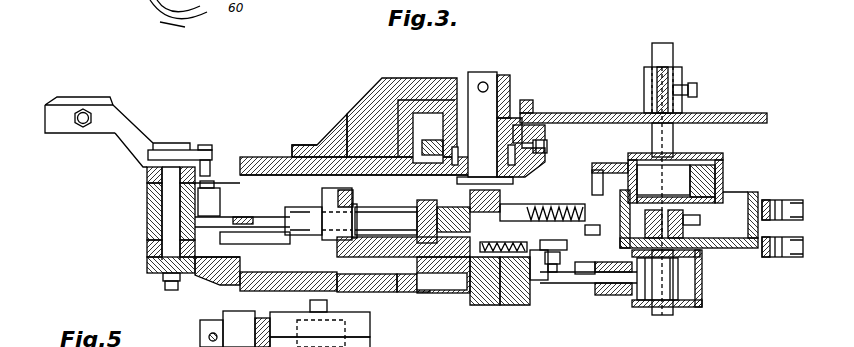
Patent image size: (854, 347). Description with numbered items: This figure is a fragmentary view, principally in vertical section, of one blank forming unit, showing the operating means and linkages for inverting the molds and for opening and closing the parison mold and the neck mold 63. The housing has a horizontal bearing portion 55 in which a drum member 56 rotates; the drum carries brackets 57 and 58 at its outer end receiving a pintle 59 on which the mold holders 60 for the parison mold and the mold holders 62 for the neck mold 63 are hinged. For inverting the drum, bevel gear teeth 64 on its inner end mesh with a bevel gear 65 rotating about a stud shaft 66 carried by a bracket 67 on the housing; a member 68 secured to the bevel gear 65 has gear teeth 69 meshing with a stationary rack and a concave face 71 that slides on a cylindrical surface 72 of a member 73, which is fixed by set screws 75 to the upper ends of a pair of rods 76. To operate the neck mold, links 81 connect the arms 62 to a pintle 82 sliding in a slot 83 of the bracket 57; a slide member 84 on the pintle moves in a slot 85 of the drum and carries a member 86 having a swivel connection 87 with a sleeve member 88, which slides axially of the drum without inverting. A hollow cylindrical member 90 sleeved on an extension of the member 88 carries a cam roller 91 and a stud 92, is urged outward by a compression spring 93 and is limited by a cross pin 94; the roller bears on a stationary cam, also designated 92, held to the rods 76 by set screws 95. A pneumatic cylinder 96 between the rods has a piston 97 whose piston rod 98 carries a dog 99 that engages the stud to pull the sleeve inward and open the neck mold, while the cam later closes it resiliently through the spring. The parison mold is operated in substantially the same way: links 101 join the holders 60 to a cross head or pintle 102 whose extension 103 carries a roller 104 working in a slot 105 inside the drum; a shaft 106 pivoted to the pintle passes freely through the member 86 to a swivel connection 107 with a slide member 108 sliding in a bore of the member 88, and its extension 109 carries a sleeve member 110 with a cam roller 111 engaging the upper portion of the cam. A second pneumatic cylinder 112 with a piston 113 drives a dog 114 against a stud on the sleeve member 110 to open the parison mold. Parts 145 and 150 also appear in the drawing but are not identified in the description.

The bearing portion 55 is at (302, 145).
The drum member 56 is at (420, 293).
The bracket 57 is at (147, 174).
The bracket 58 is at (147, 265).
The pintle 59 is at (168, 214).
The mold holders 60 is at (147, 243).
The mold holders 62 is at (130, 125).
The neck mold 63 is at (85, 98).
The bevel gear teeth 64 is at (475, 285).
The bevel gear 65 is at (540, 168).
The stud shaft 66 is at (490, 75).
The bracket 67 is at (385, 78).
The member 68 is at (508, 100).
The gear teeth 69 is at (548, 142).
The concave face 71 is at (533, 108).
The cylindrical surface 72 is at (540, 100).
The member 73 is at (745, 113).
The set screws 75 is at (697, 89).
The rods 76 is at (667, 52).
The links 81 is at (160, 150).
The pintle 82 is at (207, 160).
The slot 83 is at (222, 167).
The slide member 84 is at (218, 190).
The slot 85 is at (345, 120).
The member 86 is at (338, 276).
The swivel connection 87 is at (410, 292).
The sleeve member 88 is at (398, 157).
The hollow cylindrical member 90 is at (510, 300).
The cam roller 91 is at (556, 272).
The stud 92 is at (748, 225).
The compression spring 93 is at (523, 238).
The cross pin 94 is at (442, 279).
The set screws 95 is at (700, 219).
The pneumatic cylinder 96 is at (692, 307).
The piston 97 is at (630, 300).
The piston rod 98 is at (585, 275).
The dog 99 is at (540, 282).
The links 101 is at (268, 215).
The cross head or pintle 102 is at (322, 210).
The extension 103 is at (290, 240).
The roller 104 is at (258, 291).
The slot 105 is at (215, 284).
The shaft 106 is at (384, 221).
The swivel connection 107 is at (458, 150).
The slide member 108 is at (472, 177).
The extension 109 is at (535, 204).
The sleeve member 110 is at (530, 206).
The cam roller 111 is at (775, 200).
The pneumatic cylinder 112 is at (668, 153).
The piston 113 is at (715, 153).
The dog 114 is at (597, 170).
The block 145 is at (235, 329).
The plate 150 is at (312, 303).